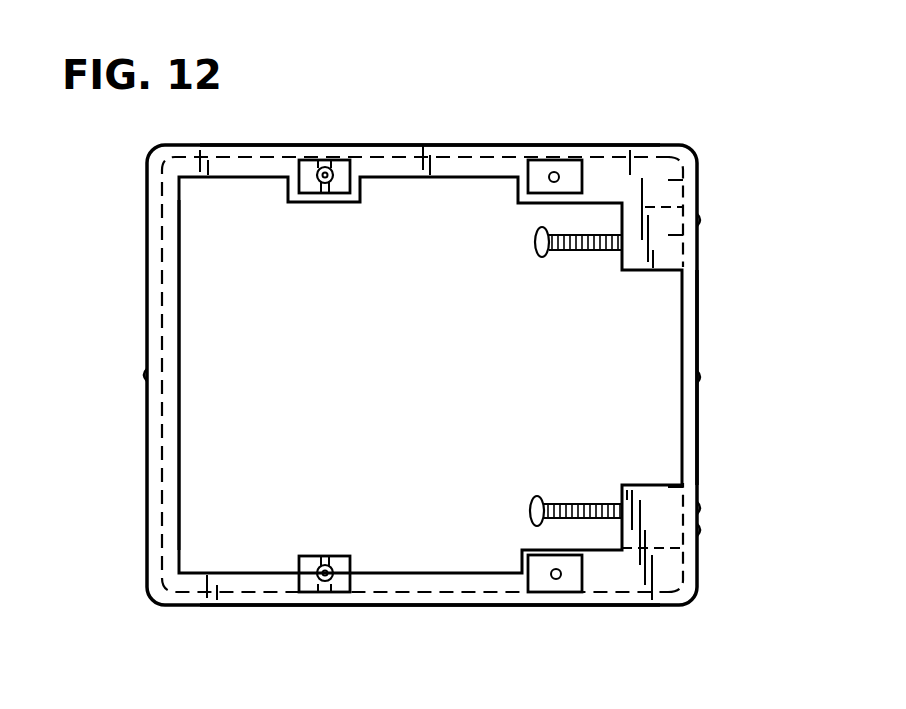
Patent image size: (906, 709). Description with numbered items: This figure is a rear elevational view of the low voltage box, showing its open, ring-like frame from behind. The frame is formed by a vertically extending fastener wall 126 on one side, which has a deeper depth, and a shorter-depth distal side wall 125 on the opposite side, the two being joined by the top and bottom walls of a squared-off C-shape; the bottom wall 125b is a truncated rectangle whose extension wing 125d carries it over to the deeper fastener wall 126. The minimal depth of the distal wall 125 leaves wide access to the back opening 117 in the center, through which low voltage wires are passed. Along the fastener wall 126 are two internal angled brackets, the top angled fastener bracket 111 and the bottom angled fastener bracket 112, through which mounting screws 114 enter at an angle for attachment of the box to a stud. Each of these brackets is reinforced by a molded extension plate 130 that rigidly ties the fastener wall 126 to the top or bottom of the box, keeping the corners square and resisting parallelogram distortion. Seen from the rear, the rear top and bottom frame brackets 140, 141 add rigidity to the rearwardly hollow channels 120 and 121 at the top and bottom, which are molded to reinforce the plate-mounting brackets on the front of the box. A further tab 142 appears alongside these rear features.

The distal side wall 125 is at (147, 343).
The bottom wall 125b is at (415, 146).
The extension wing 125d is at (432, 606).
The fastener wall 126 is at (698, 420).
The rear bottom frame bracket 141 is at (175, 418).
The back opening 117 is at (410, 403).
The rear top frame bracket 140 is at (252, 178).
The keyhole mounting tab 142 is at (447, 553).
The rearwardly hollow channel 121 is at (566, 167).
The rearwardly hollow channel 120 is at (563, 582).
The extension plate 130 is at (700, 176).
The bottom angled fastener bracket 112 is at (668, 236).
The top angled fastener bracket 111 is at (670, 502).
The mounting screw 114 is at (536, 240).